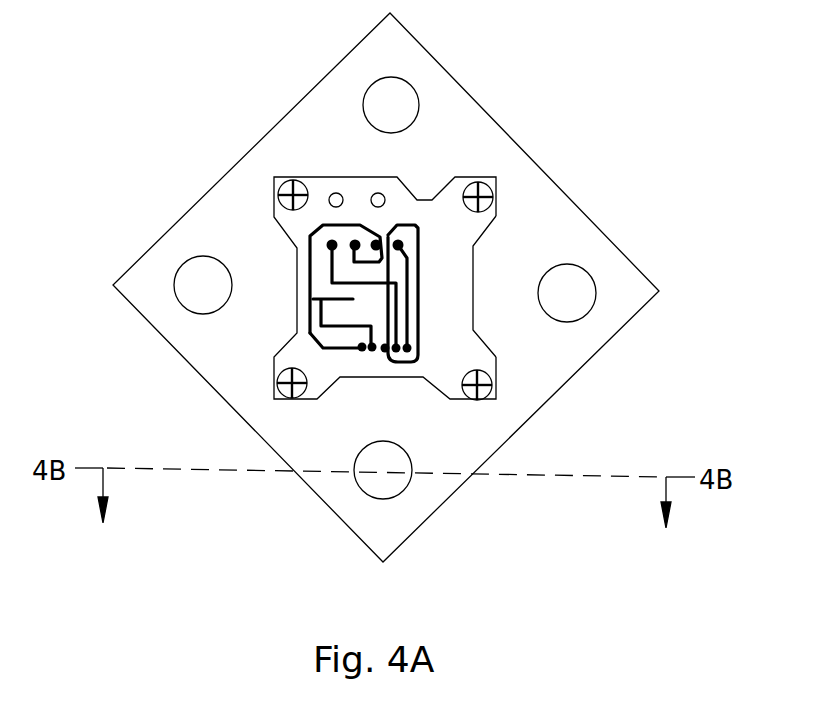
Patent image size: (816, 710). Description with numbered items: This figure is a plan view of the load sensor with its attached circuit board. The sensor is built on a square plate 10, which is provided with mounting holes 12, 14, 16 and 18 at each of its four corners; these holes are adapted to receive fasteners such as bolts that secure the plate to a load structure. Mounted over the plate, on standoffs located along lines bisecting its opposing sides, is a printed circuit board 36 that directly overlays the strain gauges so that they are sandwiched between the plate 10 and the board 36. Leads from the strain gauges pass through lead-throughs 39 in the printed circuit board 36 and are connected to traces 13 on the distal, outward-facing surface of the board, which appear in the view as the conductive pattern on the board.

The square plate 10 is at (386, 287).
The mounting hole 12 is at (453, 67).
The traces 13 is at (306, 259).
The mounting hole 14 is at (145, 251).
The mounting hole 16 is at (434, 509).
The mounting hole 18 is at (630, 257).
The printed circuit board 36 is at (561, 242).
The lead-throughs 39 is at (303, 341).